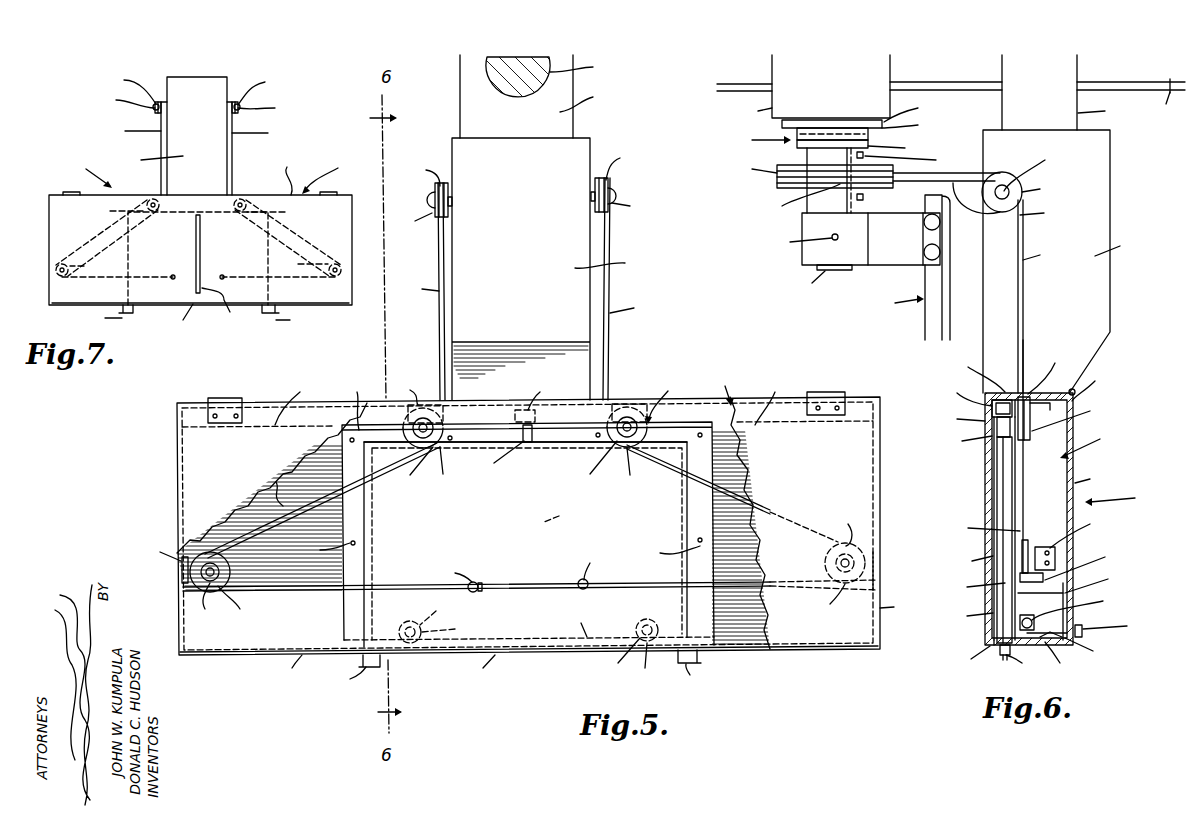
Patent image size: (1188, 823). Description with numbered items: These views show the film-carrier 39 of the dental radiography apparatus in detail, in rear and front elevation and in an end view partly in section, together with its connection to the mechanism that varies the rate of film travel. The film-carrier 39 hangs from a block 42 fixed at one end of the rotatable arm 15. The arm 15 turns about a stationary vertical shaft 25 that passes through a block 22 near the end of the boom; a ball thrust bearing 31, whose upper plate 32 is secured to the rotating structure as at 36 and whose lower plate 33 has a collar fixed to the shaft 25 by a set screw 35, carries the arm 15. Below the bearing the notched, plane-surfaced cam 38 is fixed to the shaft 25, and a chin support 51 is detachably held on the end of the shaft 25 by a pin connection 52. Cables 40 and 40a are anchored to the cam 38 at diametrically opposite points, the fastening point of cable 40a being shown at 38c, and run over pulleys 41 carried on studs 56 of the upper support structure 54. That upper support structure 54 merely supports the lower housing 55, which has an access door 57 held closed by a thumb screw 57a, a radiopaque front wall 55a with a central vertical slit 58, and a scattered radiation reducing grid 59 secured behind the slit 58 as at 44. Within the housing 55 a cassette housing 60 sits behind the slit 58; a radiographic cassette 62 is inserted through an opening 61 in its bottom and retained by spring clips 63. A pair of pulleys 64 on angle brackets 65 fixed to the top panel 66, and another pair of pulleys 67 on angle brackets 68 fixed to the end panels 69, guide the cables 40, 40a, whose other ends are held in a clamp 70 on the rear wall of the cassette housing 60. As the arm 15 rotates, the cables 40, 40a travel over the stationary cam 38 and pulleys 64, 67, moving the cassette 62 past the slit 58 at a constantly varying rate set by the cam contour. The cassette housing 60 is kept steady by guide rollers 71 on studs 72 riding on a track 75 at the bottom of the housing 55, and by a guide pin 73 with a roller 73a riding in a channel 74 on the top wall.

In FIG. 5, the arm 15 is at (535, 73).
In FIG. 6, the arm 15 is at (951, 99).
In FIG. 6, the block 22 is at (813, 88).
In FIG. 6, the vertical shaft 25 is at (822, 281).
In FIG. 6, the ball thrust bearing 31 is at (797, 140).
In FIG. 6, the upper plate 32 is at (861, 111).
In FIG. 6, the lower plate 33 is at (862, 147).
In FIG. 6, the set screw 35 is at (883, 180).
In FIG. 6, the securing point 36 is at (869, 126).
In FIG. 6, the cam 38 is at (864, 173).
In FIG. 6, the fastening point 38c is at (877, 200).
In FIG. 7, the film-carrier 39 is at (200, 229).
In FIG. 5, the film-carrier 39 is at (528, 511).
In FIG. 6, the film-carrier 39 is at (1120, 495).
In FIG. 7, the cable 40 is at (259, 148).
In FIG. 5, the cable 40 is at (422, 291).
In FIG. 6, the cable 40 is at (1041, 296).
In FIG. 7, the cable 40a is at (132, 148).
In FIG. 5, the cable 40a is at (633, 289).
In FIG. 6, the cable 40a is at (1047, 212).
In FIG. 7, the pulleys 41 is at (194, 89).
In FIG. 5, the pulleys 41 is at (522, 210).
In FIG. 6, the pulleys 41 is at (1023, 192).
In FIG. 5, the block 42 is at (539, 96).
In FIG. 6, the block 42 is at (1065, 92).
In FIG. 5, the grid securing means 44 is at (325, 550).
In FIG. 6, the chin support 51 is at (916, 267).
In FIG. 6, the pin connection 52 is at (853, 239).
In FIG. 7, the upper support structure 54 is at (173, 136).
In FIG. 5, the upper support structure 54 is at (550, 269).
In FIG. 6, the upper support structure 54 is at (1063, 262).
In FIG. 7, the lower housing 55 is at (209, 173).
In FIG. 5, the lower housing 55 is at (527, 543).
In FIG. 6, the lower housing 55 is at (1089, 441).
In FIG. 7, the front wall 55a is at (212, 225).
In FIG. 5, the front wall 55a is at (476, 523).
In FIG. 6, the front wall 55a is at (957, 414).
In FIG. 7, the studs 56 is at (196, 103).
In FIG. 5, the studs 56 is at (522, 179).
In FIG. 6, the studs 56 is at (1030, 171).
In FIG. 5, the access door 57 is at (526, 399).
In FIG. 6, the access door 57 is at (1045, 515).
In FIG. 6, the thumb screw 57a is at (1116, 624).
In FIG. 7, the slit 58 is at (218, 272).
In FIG. 5, the slit 58 is at (562, 513).
In FIG. 6, the slit 58 is at (969, 528).
In FIG. 5, the scattered radiation reducing grid 59 is at (527, 511).
In FIG. 6, the scattered radiation reducing grid 59 is at (982, 528).
In FIG. 5, the cassette housing 60 is at (525, 407).
In FIG. 6, the cassette housing 60 is at (1074, 578).
In FIG. 6, the opening 61 is at (971, 656).
In FIG. 7, the cassette 62 is at (200, 318).
In FIG. 5, the cassette 62 is at (529, 665).
In FIG. 6, the cassette 62 is at (978, 540).
In FIG. 7, the spring clips 63 is at (197, 318).
In FIG. 5, the spring clips 63 is at (518, 672).
In FIG. 6, the spring clips 63 is at (1020, 661).
In FIG. 7, the pulleys 64 is at (198, 212).
In FIG. 5, the pulleys 64 is at (525, 449).
In FIG. 6, the pulleys 64 is at (1065, 418).
In FIG. 5, the angle brackets 65 is at (530, 517).
In FIG. 6, the angle brackets 65 is at (1072, 386).
In FIG. 5, the top panel 66 is at (520, 398).
In FIG. 6, the top panel 66 is at (1047, 456).
In FIG. 7, the pulleys 67 is at (198, 239).
In FIG. 5, the pulleys 67 is at (531, 605).
In FIG. 6, the pulleys 67 is at (982, 525).
In FIG. 5, the angle brackets 68 is at (527, 566).
In FIG. 6, the angle brackets 68 is at (1066, 540).
In FIG. 5, the end panels 69 is at (525, 576).
In FIG. 6, the end panels 69 is at (907, 603).
In FIG. 5, the clamp 70 is at (520, 568).
In FIG. 6, the clamp 70 is at (1074, 562).
In FIG. 5, the guide rollers 71 is at (531, 649).
In FIG. 6, the guide rollers 71 is at (1077, 647).
In FIG. 5, the studs 72 is at (528, 640).
In FIG. 6, the studs 72 is at (1073, 609).
In FIG. 5, the guide pin 73 is at (504, 451).
In FIG. 6, the guide pin 73 is at (974, 426).
In FIG. 5, the roller 73a is at (537, 396).
In FIG. 6, the roller 73a is at (970, 395).
In FIG. 6, the channel 74 is at (979, 385).
In FIG. 5, the track 75 is at (577, 621).
In FIG. 6, the track 75 is at (1053, 630).